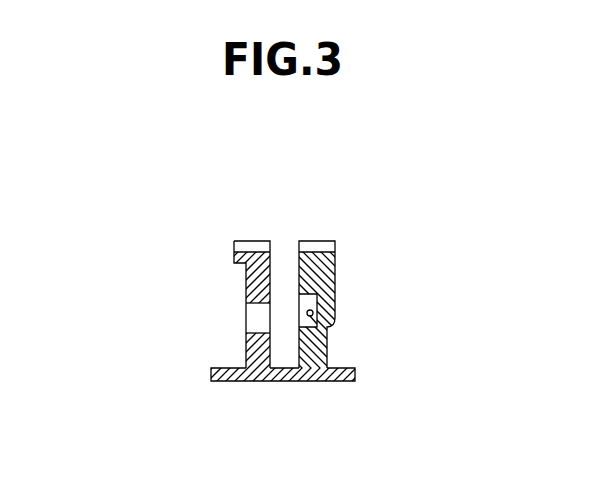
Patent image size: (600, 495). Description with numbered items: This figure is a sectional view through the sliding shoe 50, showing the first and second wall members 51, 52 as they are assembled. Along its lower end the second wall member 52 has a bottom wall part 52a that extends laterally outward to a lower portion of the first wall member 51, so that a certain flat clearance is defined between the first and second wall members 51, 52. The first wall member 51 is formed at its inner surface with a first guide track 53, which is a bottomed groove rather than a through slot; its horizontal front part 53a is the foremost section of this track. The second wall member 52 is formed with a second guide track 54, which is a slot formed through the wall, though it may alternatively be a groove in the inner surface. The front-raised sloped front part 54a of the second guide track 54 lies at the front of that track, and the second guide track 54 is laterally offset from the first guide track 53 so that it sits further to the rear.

The sliding shoe 50 is at (290, 334).
The first wall member 51 is at (325, 242).
The second wall member 52 is at (252, 242).
The bottom wall part 52a is at (285, 382).
The first guide track 53 is at (307, 295).
The horizontal front part 53a is at (335, 318).
The second guide track 54 is at (247, 306).
The front-raised sloped front part 54a is at (247, 323).